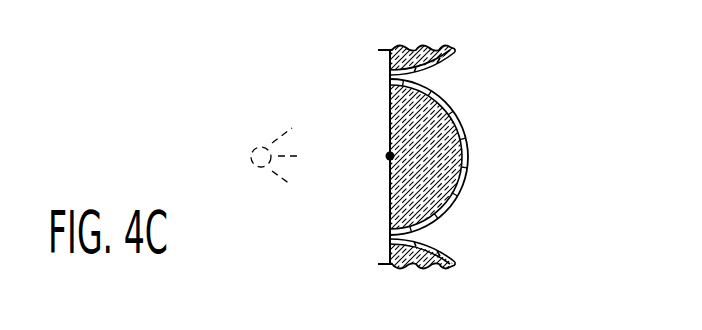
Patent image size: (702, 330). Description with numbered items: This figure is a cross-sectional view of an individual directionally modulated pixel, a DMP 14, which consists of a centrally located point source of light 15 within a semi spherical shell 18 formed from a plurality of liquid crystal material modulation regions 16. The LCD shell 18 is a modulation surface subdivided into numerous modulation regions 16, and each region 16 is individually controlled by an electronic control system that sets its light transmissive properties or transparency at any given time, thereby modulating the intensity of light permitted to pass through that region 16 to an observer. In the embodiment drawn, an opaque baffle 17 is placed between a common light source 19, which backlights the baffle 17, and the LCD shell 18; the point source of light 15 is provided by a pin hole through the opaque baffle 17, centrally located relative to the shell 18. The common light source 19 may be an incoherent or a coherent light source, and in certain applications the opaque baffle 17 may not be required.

The directionally modulated pixel 14 is at (468, 102).
The point source of light 15 is at (388, 158).
The modulation region 16 is at (466, 118).
The opaque baffle 17 is at (382, 128).
The semi spherical shell 18 is at (451, 108).
The common light source 19 is at (254, 149).